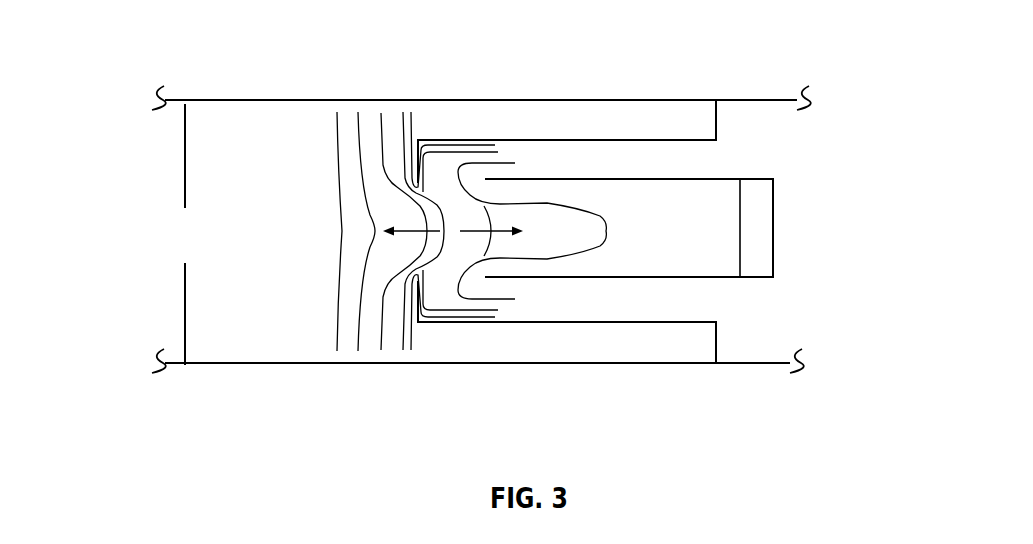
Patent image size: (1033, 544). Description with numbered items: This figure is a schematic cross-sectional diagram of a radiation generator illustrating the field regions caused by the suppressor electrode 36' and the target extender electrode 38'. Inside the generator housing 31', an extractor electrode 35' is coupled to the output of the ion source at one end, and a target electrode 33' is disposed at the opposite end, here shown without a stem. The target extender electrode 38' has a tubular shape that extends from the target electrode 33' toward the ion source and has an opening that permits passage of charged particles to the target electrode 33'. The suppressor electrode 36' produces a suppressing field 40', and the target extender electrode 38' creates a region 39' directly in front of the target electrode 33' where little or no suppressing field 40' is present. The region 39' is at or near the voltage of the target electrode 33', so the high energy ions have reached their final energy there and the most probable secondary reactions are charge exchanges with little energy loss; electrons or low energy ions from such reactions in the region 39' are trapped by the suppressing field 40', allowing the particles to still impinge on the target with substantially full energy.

The generator housing 31' is at (481, 260).
The target electrode 33' is at (693, 225).
The extractor electrode 35' is at (113, 234).
The suppressor electrode 36' is at (626, 200).
The target extender electrode 38' is at (530, 194).
The region 39' is at (550, 309).
The suppressing field 40' is at (390, 189).